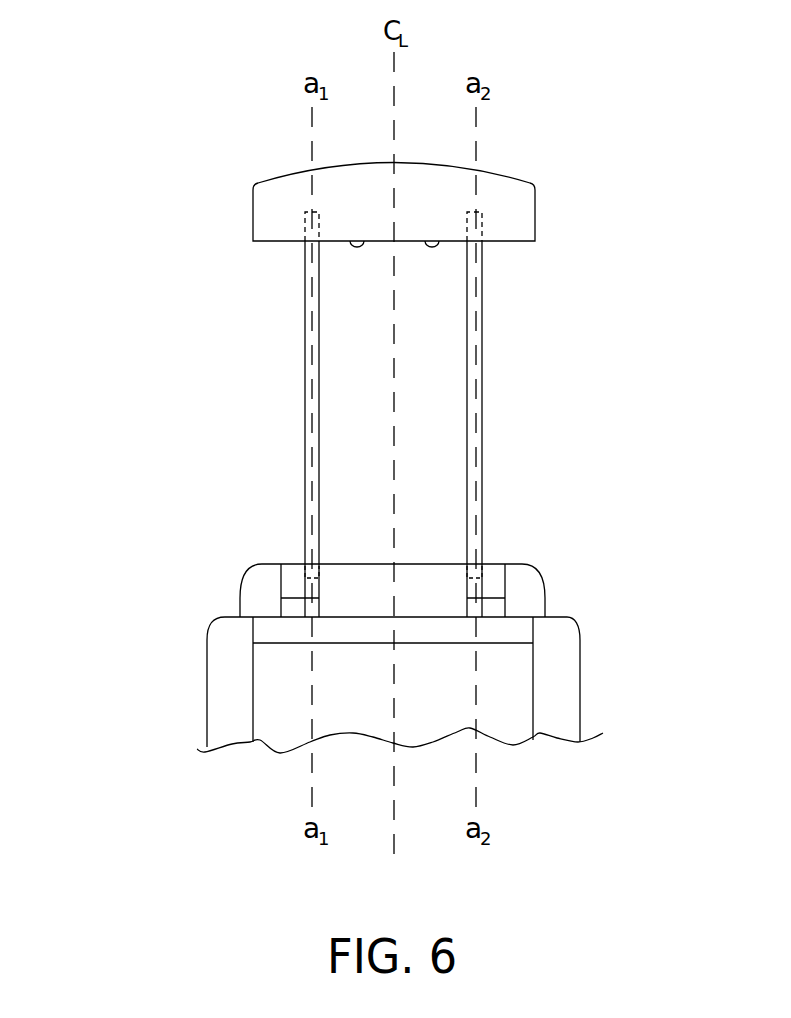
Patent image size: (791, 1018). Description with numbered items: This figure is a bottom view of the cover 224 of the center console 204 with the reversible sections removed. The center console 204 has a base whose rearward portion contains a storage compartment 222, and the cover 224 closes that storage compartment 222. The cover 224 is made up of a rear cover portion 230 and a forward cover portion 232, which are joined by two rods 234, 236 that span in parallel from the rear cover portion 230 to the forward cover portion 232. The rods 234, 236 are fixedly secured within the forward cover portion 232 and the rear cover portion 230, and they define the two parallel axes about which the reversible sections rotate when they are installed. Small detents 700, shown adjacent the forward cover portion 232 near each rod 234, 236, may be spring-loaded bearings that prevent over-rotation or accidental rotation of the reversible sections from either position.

The center console 204 is at (563, 717).
The storage compartment 222 is at (520, 695).
The cover 224 is at (178, 396).
The rear cover portion 230 is at (530, 591).
The forward cover portion 232 is at (517, 208).
The rod 234 is at (303, 488).
The rod 236 is at (484, 458).
The detent 700 is at (357, 247).